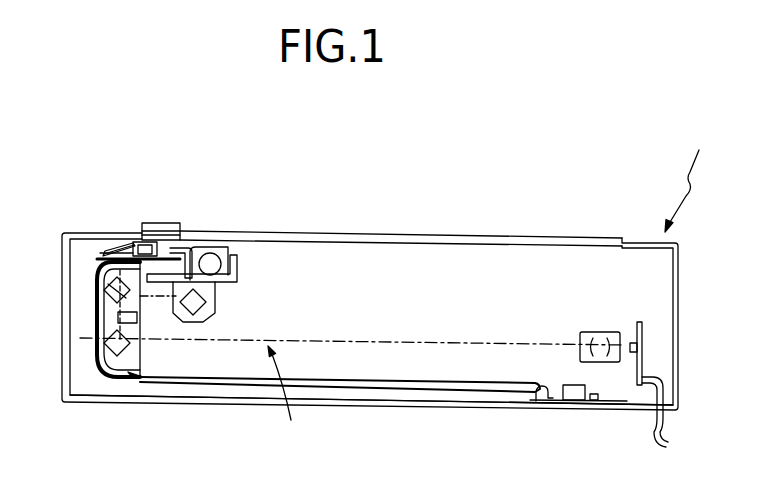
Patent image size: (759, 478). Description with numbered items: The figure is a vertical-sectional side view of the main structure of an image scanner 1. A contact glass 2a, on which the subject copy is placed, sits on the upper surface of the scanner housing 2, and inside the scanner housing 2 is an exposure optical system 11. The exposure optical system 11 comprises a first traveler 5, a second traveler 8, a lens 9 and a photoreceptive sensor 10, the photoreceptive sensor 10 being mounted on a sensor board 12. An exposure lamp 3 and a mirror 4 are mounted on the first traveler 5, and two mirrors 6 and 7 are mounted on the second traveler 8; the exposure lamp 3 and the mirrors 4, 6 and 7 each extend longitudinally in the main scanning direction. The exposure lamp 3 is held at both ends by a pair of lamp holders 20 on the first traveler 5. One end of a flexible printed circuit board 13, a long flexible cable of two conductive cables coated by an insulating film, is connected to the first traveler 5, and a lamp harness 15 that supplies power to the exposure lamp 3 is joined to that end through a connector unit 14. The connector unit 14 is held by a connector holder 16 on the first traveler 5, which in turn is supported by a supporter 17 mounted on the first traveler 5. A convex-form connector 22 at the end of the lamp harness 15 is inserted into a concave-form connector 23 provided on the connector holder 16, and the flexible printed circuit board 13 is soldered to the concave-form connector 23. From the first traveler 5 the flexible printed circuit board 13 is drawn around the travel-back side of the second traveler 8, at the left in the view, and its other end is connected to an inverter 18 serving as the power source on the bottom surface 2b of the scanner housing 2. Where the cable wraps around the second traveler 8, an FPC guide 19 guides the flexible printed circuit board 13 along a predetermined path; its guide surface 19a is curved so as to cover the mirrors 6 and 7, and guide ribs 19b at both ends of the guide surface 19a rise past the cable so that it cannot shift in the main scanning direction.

The image scanner 1 is at (686, 186).
The scanner housing 2 is at (628, 240).
The contact glass 2a is at (361, 232).
The bottom surface 2b is at (374, 399).
The exposure lamp 3 is at (222, 246).
The mirror 4 is at (193, 324).
The first traveler 5 is at (239, 270).
The mirror 6 is at (102, 256).
The mirror 7 is at (100, 368).
The second traveler 8 is at (150, 380).
The lens 9 is at (596, 332).
The photoreceptive sensor 10 is at (634, 353).
The exposure optical system 11 is at (285, 401).
The sensor board 12 is at (640, 322).
The flexible printed circuit board 13 is at (244, 381).
The connector unit 14 is at (155, 224).
The lamp harness 15 is at (107, 244).
The connector holder 16 is at (113, 248).
The supporter 17 is at (191, 250).
The inverter 18 is at (572, 404).
The FPC guide 19 is at (95, 350).
The guide surface 19a is at (122, 320).
The guide ribs 19b is at (108, 280).
The lamp holders 20 is at (218, 258).
The convex-form connector 22 is at (140, 245).
The concave-form connector 23 is at (176, 242).